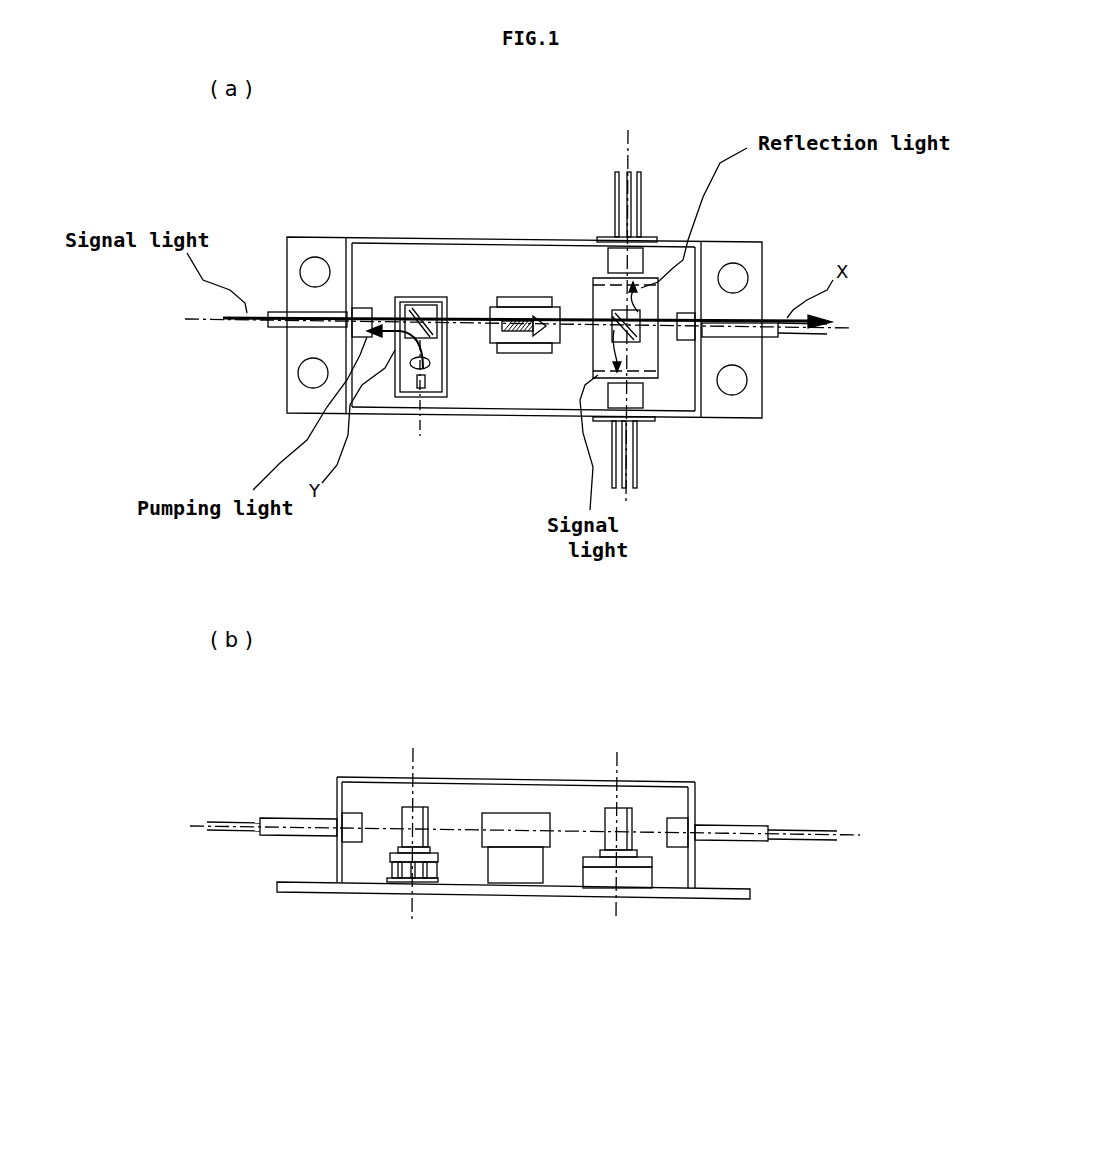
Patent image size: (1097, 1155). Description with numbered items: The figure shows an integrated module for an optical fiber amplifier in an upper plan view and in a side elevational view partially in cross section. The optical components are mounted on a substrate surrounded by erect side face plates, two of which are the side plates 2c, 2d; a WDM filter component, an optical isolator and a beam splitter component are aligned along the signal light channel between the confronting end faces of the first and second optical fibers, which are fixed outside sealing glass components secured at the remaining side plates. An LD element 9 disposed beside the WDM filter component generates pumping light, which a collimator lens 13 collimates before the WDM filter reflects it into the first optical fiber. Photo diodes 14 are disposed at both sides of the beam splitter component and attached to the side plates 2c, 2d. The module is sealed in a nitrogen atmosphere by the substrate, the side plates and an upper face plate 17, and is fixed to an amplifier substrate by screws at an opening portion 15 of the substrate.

The side plate 2c is at (523, 204).
The side plate 2d is at (523, 449).
The LD element 9 is at (415, 435).
The collimator lens 13 is at (386, 458).
The photo diode 14 is at (644, 318).
The opening portion 15 is at (792, 254).
The upper face plate 17 is at (516, 738).